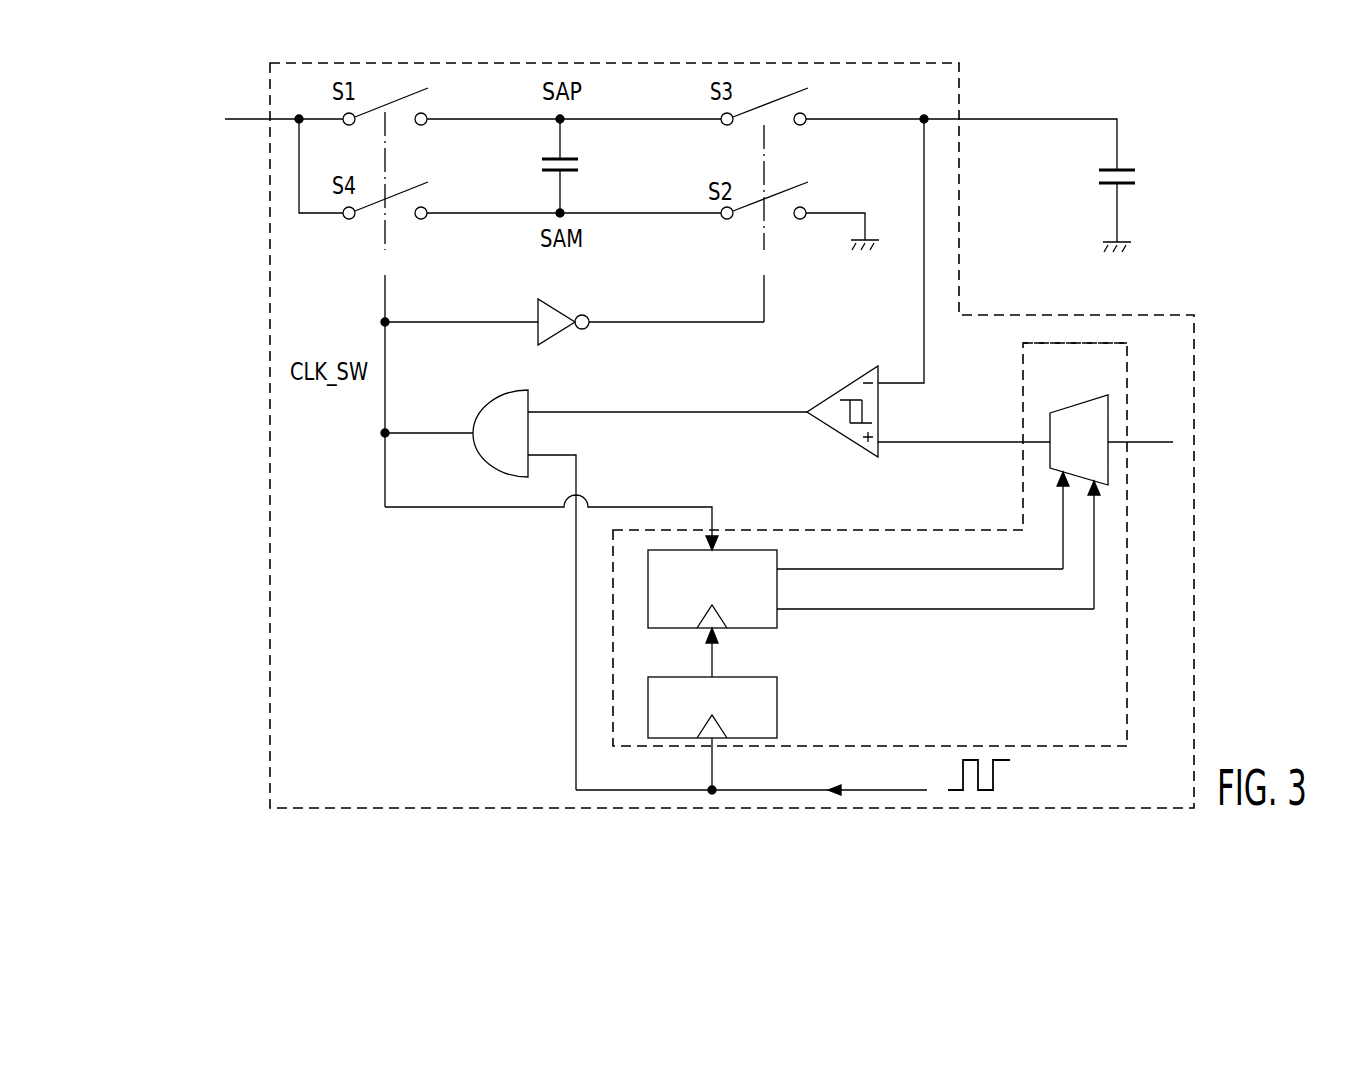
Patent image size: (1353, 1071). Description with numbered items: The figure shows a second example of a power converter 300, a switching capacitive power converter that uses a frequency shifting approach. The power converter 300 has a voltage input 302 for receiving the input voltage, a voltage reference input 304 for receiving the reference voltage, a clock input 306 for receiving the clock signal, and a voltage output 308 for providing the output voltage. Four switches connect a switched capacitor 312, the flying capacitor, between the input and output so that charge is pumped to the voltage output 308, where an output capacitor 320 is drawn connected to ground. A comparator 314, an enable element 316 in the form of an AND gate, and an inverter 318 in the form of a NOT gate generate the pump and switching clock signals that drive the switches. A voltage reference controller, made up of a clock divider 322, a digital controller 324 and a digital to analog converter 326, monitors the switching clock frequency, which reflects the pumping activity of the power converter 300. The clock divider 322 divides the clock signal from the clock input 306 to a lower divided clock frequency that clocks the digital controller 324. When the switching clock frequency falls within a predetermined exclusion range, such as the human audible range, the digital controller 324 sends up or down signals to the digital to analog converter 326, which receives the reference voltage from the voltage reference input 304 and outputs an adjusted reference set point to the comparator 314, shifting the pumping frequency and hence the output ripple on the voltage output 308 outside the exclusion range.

The power converter 300 is at (270, 277).
The voltage input 302 is at (208, 102).
The voltage reference input 304 is at (1160, 410).
The clock input 306 is at (865, 790).
The voltage output 308 is at (1052, 120).
The switched capacitor 312 is at (548, 158).
The comparator 314 is at (842, 383).
The enable element 316 is at (483, 407).
The inverter 318 is at (538, 315).
The output capacitor Cout 320 is at (1135, 183).
The clock divider 322 is at (777, 700).
The digital controller 324 is at (777, 618).
The DAC 326 is at (1093, 395).